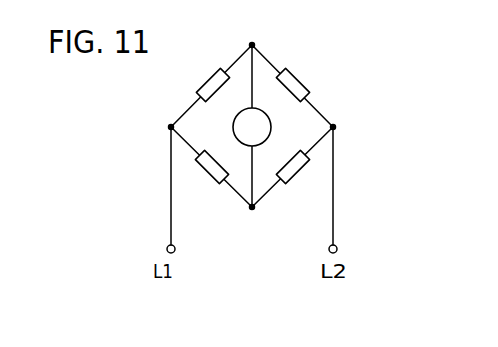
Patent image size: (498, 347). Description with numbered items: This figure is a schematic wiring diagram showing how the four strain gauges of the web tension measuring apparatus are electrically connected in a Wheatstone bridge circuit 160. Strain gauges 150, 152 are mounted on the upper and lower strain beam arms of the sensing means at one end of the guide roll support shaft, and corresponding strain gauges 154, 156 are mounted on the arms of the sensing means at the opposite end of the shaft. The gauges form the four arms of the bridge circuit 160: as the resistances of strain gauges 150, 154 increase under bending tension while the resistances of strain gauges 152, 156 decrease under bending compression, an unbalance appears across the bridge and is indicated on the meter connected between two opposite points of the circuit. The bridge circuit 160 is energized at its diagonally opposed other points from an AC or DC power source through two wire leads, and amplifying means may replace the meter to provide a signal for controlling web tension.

The strain gauge 150 is at (205, 83).
The strain gauge 152 is at (300, 82).
The strain gauge 154 is at (292, 171).
The strain gauge 156 is at (213, 171).
The Wheatstone bridge circuit 160 is at (246, 130).